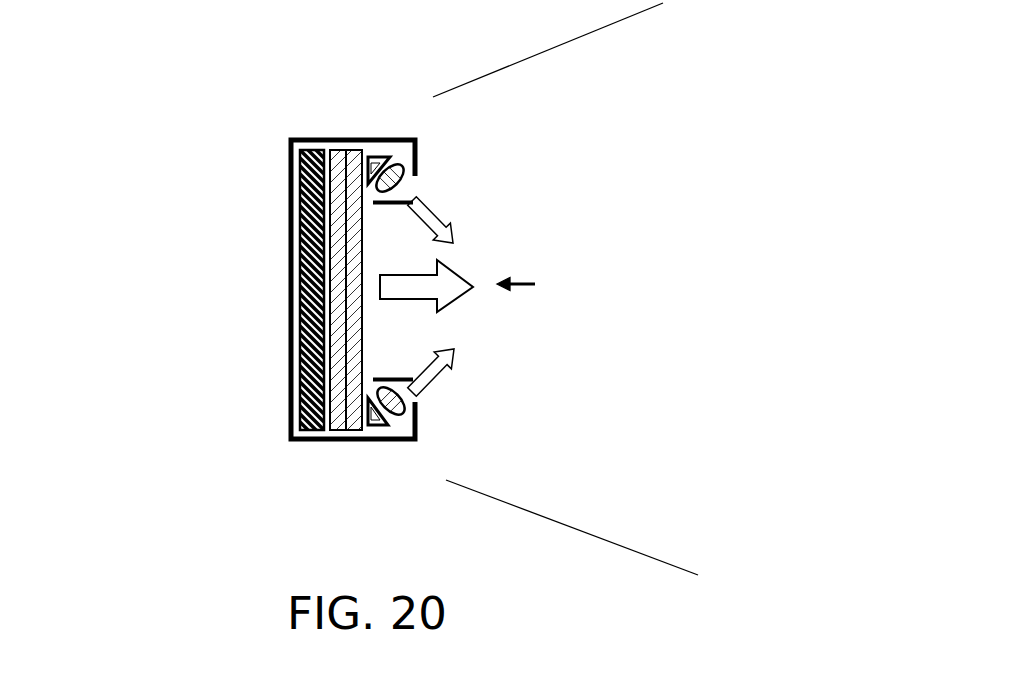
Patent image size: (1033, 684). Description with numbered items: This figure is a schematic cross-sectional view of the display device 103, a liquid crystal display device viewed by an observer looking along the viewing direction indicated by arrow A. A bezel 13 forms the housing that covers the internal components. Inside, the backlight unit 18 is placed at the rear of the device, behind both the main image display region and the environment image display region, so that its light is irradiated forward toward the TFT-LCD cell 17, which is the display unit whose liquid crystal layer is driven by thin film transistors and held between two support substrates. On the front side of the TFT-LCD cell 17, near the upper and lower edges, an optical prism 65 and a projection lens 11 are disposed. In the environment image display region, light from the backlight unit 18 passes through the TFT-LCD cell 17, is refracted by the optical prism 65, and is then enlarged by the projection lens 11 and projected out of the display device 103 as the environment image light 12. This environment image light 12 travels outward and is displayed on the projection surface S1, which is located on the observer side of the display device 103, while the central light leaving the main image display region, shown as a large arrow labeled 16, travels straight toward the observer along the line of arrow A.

The display device 103 is at (137, 413).
The bezel 13 is at (290, 402).
The backlight unit 18 is at (302, 292).
The TFT-LCD cell 17 is at (340, 268).
The optical prism 65 is at (385, 163).
The projection lens 11 is at (403, 170).
The environment image light 12 is at (443, 296).
The main light emission 16 is at (426, 286).
The viewing direction arrow A is at (532, 286).
The projection surface S1 is at (615, 23).